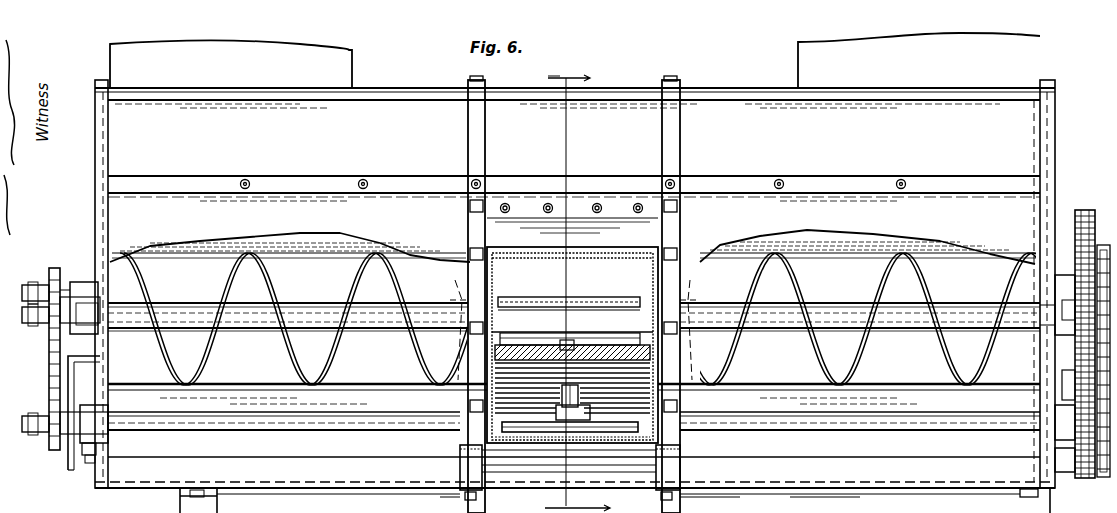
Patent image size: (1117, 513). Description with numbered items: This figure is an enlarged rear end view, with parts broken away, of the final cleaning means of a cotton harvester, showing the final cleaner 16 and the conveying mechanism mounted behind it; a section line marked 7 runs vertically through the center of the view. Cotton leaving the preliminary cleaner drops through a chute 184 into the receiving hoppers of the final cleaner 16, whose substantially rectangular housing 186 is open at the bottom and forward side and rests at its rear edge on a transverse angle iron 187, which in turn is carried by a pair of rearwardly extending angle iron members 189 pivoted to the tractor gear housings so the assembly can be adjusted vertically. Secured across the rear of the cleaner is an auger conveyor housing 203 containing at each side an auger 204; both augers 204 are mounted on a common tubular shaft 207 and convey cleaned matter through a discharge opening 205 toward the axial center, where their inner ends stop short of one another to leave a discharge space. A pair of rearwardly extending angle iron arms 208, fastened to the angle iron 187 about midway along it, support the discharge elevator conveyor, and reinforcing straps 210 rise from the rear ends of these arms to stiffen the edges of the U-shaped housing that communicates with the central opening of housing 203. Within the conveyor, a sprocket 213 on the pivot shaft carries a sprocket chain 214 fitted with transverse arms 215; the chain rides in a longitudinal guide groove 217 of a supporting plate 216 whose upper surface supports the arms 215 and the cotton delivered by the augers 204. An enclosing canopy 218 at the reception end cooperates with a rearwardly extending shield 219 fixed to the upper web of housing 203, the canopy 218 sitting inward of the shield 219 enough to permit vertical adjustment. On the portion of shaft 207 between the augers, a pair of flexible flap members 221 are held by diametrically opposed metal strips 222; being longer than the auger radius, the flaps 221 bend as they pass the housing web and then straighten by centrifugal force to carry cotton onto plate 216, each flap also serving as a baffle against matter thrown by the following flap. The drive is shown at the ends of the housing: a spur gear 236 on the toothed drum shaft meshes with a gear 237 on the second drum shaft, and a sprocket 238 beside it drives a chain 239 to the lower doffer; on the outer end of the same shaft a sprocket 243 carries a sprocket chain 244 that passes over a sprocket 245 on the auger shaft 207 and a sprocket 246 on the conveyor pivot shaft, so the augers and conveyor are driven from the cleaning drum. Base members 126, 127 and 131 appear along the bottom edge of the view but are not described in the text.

The section line 7 is at (577, 282).
The final cleaner 16 is at (362, 104).
The base member 126 is at (723, 505).
The base member 127 is at (439, 505).
The base member 131 is at (825, 505).
The chute 184 is at (210, 40).
The housing 186 is at (1040, 494).
The angle iron 187 is at (945, 488).
The angle iron members 189 is at (178, 505).
The auger conveyor housing 203 is at (303, 198).
The auger 204 is at (235, 262).
The discharge opening 205 is at (330, 240).
The tubular shaft 207 is at (292, 312).
The angle iron arms 208 is at (460, 458).
The straps 210 is at (462, 396).
The sprocket 213 is at (625, 340).
The sprocket chain 214 is at (568, 338).
The transverse arms 215 is at (570, 427).
The supporting plate 216 is at (516, 343).
The guide groove 217 is at (598, 345).
The canopy 218 is at (612, 332).
The shield 219 is at (645, 248).
The flexible flap members 221 is at (546, 300).
The metal strips 222 is at (502, 297).
The spur gear 236 is at (1088, 200).
The gear 237 is at (1086, 480).
The sprocket 238 is at (1095, 242).
The chain 239 is at (1097, 376).
The sprocket 243 is at (44, 266).
The sprocket chain 244 is at (68, 362).
The sprocket 245 is at (52, 340).
The sprocket 246 is at (46, 414).